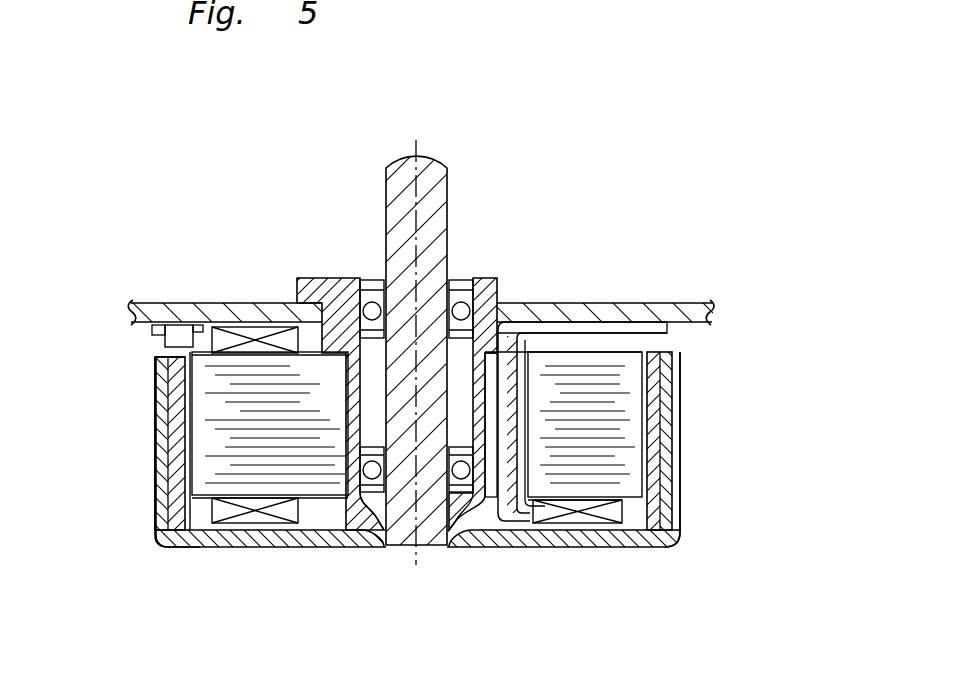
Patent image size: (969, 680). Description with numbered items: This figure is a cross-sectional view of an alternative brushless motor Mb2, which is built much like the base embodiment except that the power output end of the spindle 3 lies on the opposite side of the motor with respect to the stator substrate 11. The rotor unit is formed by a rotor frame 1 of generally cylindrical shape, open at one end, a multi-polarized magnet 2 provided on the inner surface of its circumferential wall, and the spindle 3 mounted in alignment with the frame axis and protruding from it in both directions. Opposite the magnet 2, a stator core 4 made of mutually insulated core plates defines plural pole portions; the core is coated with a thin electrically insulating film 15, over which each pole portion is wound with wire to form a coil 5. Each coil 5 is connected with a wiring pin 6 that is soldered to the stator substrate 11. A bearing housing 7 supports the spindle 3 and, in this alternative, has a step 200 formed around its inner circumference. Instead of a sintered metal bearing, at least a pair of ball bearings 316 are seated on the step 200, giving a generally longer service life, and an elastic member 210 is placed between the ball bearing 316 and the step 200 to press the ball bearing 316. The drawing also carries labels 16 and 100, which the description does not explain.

The brushless motor Mb2 is at (652, 118).
The rotor frame 1 is at (230, 545).
The multi-polarized magnet 2 is at (168, 545).
The spindle 3 is at (407, 197).
The stator core 4 is at (627, 470).
The coil 5 is at (600, 513).
The wiring pin 6 is at (613, 323).
The bearing housing 7 is at (327, 293).
The stator substrate 11 is at (167, 315).
The thin film 15 is at (548, 492).
The spacer 16 is at (683, 323).
The terminal 100 is at (173, 333).
The step 200 is at (372, 436).
The elastic member 210 is at (423, 507).
The ball bearings 316 is at (478, 330).